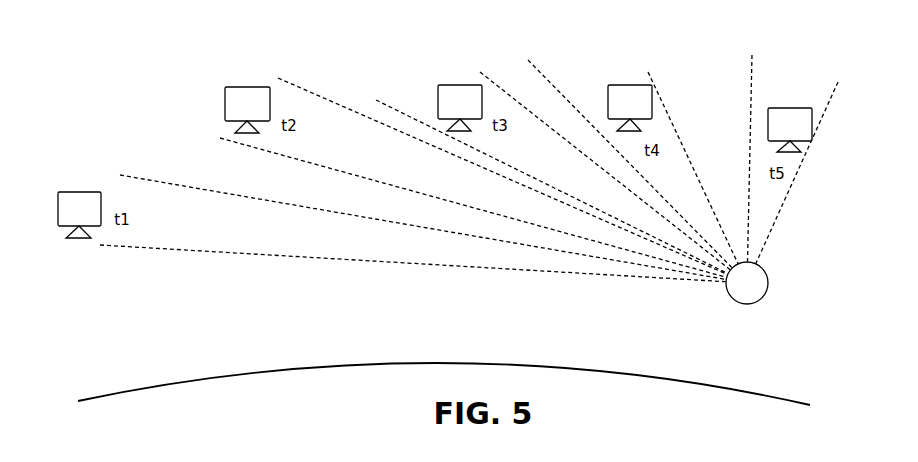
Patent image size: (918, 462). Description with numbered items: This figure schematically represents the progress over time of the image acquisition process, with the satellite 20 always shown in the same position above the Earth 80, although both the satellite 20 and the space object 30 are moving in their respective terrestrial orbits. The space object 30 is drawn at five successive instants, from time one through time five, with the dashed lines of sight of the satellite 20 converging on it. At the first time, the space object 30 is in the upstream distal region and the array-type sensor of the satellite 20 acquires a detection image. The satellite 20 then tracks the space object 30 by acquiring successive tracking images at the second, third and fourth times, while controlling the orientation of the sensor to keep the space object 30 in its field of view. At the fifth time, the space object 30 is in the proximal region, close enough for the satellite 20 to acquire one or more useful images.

The satellite 20 is at (768, 281).
The space object 30 is at (82, 192).
The Earth 80 is at (130, 388).